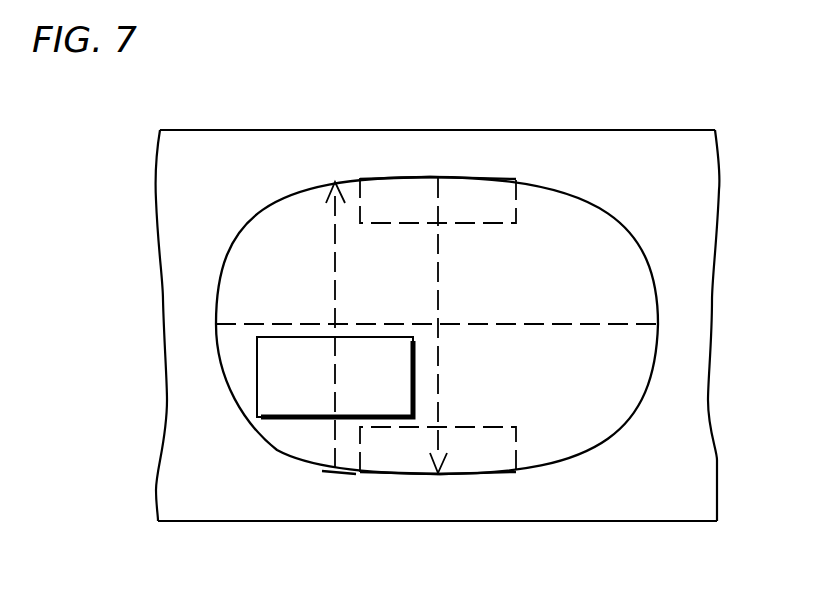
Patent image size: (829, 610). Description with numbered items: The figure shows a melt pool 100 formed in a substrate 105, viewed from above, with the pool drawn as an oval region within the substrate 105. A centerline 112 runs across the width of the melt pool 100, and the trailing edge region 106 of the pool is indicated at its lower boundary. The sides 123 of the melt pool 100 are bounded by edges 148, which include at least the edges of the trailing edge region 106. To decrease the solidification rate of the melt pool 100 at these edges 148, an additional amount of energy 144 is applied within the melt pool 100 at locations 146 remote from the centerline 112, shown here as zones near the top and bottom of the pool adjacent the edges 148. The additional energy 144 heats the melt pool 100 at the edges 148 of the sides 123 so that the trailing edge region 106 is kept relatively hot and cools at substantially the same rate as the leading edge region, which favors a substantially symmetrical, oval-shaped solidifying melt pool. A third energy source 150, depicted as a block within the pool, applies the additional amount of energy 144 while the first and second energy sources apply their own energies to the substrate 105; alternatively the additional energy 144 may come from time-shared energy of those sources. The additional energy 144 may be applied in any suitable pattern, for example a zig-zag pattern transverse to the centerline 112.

The melt pool 100 is at (548, 223).
The substrate 105 is at (650, 160).
The trailing edge region 106 is at (338, 476).
The centerline 112 is at (546, 322).
The sides 123 is at (272, 196).
The additional amount of energy 144 is at (335, 262).
The locations 146 is at (407, 195).
The edges 148 is at (384, 177).
The third energy source 150 is at (257, 378).